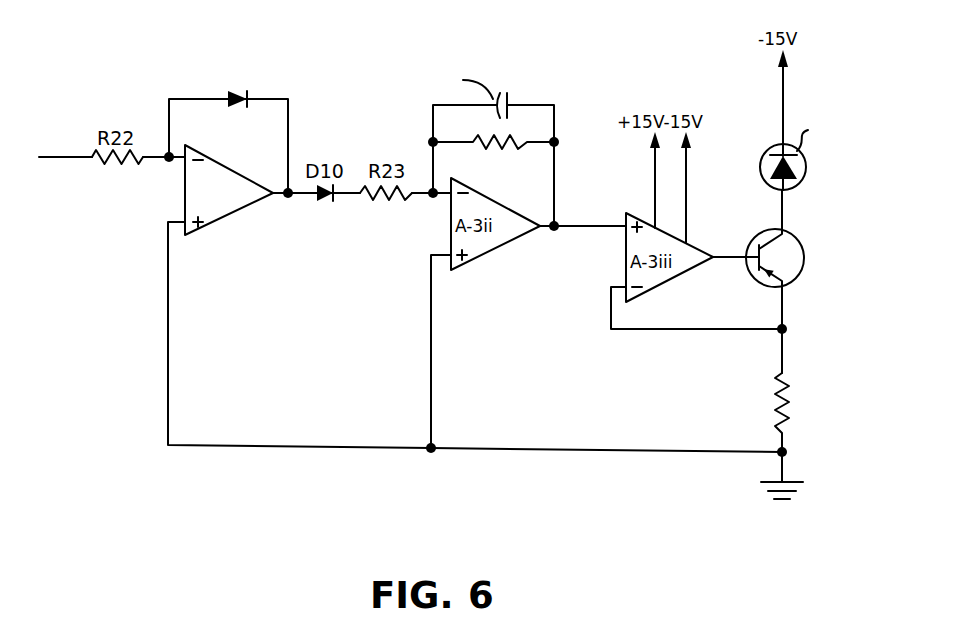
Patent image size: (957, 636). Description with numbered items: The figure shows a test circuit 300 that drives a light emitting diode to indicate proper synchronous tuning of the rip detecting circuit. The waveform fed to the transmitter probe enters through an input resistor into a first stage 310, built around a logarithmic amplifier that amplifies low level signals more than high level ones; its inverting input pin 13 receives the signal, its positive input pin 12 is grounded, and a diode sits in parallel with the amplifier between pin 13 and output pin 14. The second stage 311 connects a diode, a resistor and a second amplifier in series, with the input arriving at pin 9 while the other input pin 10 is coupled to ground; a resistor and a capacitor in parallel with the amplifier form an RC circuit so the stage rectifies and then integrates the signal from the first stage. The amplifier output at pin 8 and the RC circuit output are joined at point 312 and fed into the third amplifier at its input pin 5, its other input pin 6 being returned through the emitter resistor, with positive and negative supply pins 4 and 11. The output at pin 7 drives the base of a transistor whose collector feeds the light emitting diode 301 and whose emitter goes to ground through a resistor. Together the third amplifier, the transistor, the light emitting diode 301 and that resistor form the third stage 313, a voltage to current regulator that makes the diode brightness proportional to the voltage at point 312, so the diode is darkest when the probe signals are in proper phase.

The test circuit 300 is at (165, 62).
The first stage 310 is at (320, 72).
The second stage 311 is at (565, 65).
The point 312 is at (597, 228).
The third stage 313 is at (747, 135).
The LED 301 is at (805, 166).
The positive supply pin of A-3iii 4 is at (661, 182).
The non-inverting input of A-3iii 5 is at (613, 239).
The inverting input of A-3iii 6 is at (688, 308).
The output of A-3iii 7 is at (736, 270).
The output node of A-3ii 8 is at (550, 236).
The inverting input of A-3ii 9 is at (431, 205).
The non-inverting input of A-3ii 10 is at (428, 351).
The negative supply pin of A-3iii 11 is at (702, 193).
The non-inverting input of A-3i 12 is at (287, 332).
The inverting input node of A-3i 13 is at (164, 170).
The output node of A-3i 14 is at (295, 205).